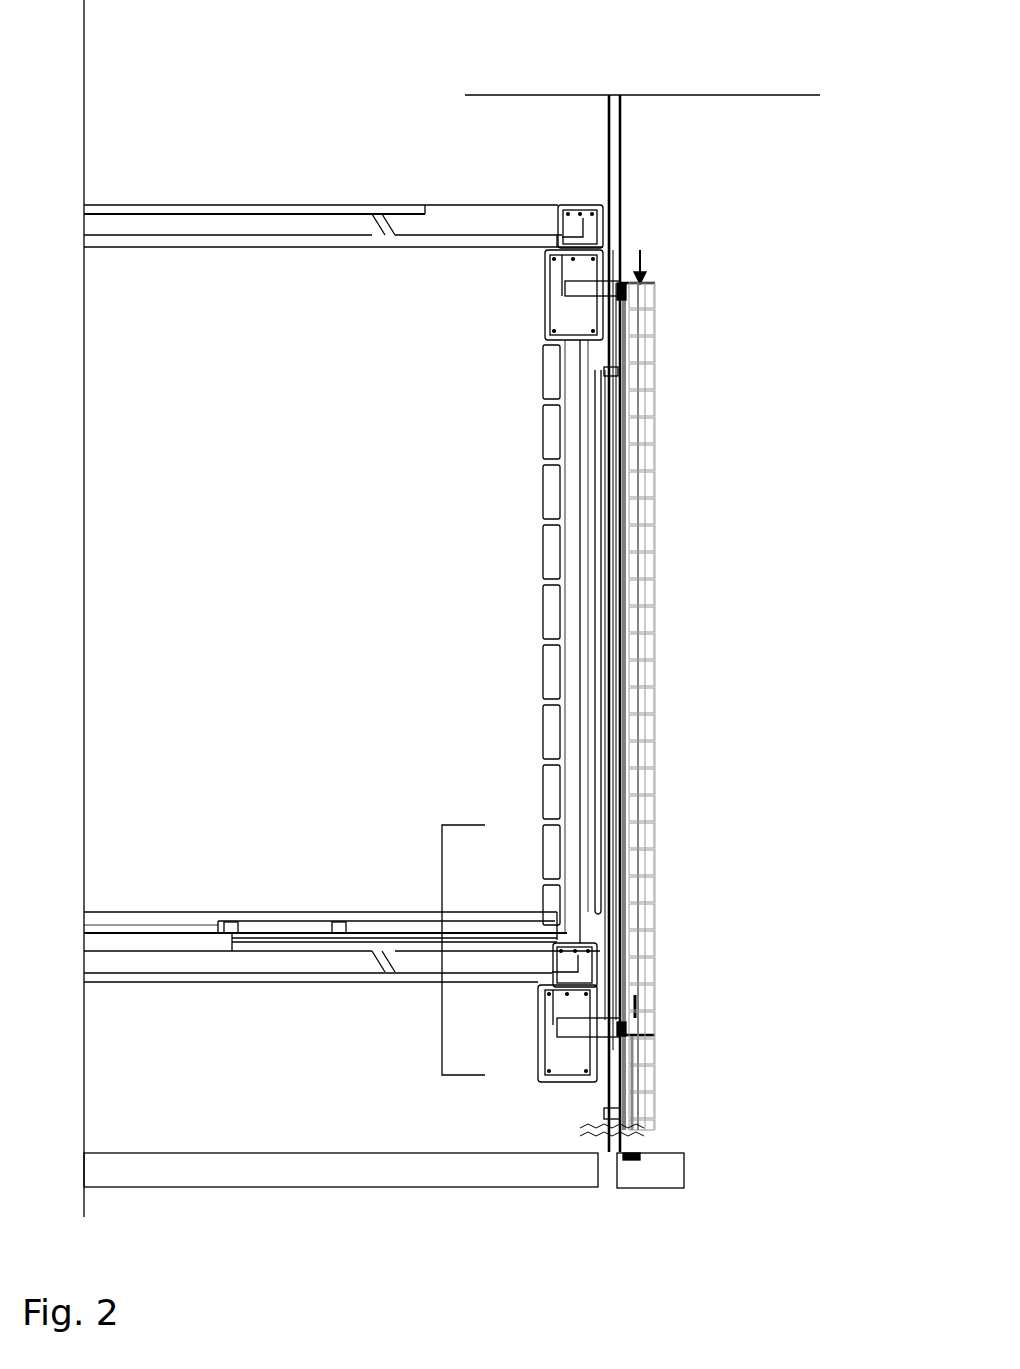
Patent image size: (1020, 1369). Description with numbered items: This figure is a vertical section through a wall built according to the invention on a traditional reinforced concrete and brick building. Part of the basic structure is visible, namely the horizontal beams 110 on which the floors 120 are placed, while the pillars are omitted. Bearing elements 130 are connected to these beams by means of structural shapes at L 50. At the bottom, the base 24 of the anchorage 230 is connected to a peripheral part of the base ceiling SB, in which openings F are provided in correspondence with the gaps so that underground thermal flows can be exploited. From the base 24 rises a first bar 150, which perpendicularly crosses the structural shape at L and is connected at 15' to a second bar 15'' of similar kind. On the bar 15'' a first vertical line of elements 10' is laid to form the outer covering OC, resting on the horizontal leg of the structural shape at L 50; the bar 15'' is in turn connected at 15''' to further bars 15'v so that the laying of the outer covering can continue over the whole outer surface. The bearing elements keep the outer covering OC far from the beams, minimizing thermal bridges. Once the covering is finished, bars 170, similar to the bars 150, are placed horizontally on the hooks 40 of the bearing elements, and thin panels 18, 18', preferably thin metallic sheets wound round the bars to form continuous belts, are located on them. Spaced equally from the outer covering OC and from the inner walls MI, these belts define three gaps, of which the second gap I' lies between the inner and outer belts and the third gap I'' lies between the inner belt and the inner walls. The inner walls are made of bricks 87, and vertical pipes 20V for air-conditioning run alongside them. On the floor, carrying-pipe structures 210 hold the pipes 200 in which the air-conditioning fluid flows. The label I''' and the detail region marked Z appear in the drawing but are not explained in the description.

The floors 120 is at (160, 208).
The pipes 200 is at (131, 935).
The insulation layer I''' is at (285, 876).
The horizontal beams 110 is at (545, 306).
The bearing elements 130 is at (638, 268).
The structural shape at L 50 is at (626, 290).
The bars 15'v is at (691, 248).
The connection 15''' is at (688, 271).
The second bar 15'' is at (694, 706).
The connection 15' is at (676, 963).
The elements 10' is at (692, 706).
The outer covering OC is at (668, 456).
The carrying-pipe structures 210 is at (602, 413).
The vertical pipes 20V is at (603, 462).
The third gap I'' is at (514, 641).
The bricks 87 is at (556, 595).
The inner walls MI is at (508, 652).
The second gap I' is at (662, 706).
The thin panel 18' is at (666, 695).
The thin panel 18 is at (664, 651).
The detail region Z is at (441, 953).
The base ceiling SB is at (170, 1162).
The openings F is at (603, 1173).
The hooks 40 is at (580, 1130).
The anchorage 230 is at (668, 1140).
The first bar 150 is at (645, 1062).
The bars 170 is at (622, 1117).
The base 24 is at (600, 1146).